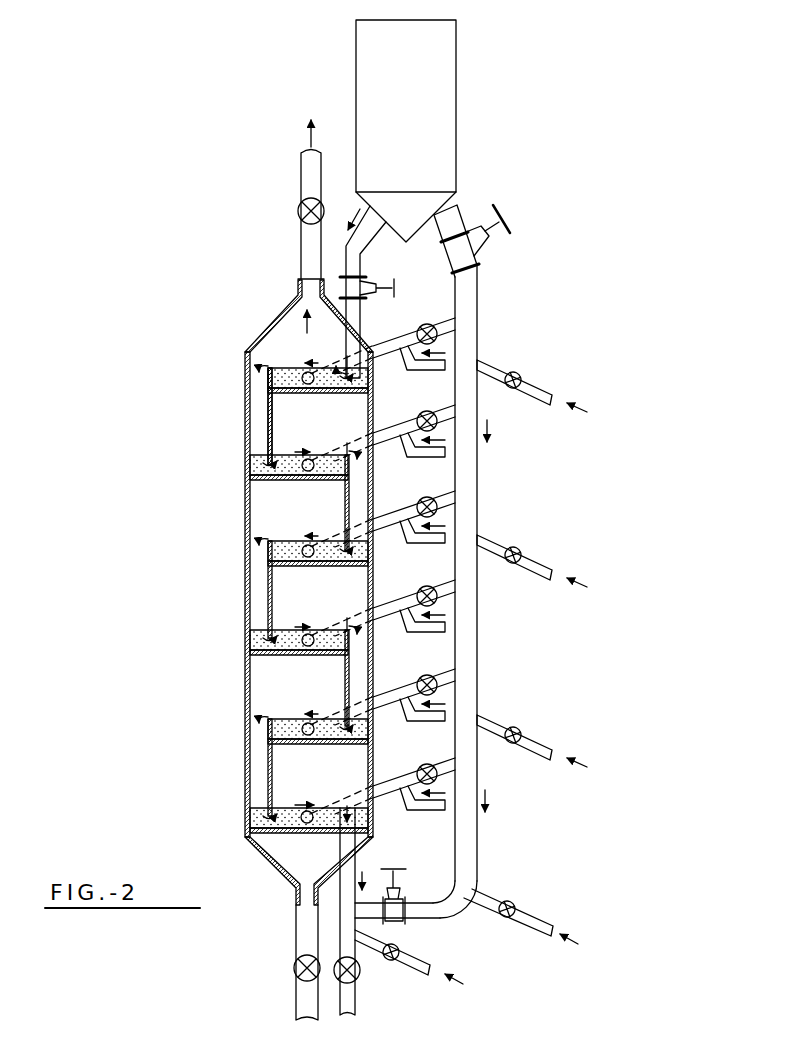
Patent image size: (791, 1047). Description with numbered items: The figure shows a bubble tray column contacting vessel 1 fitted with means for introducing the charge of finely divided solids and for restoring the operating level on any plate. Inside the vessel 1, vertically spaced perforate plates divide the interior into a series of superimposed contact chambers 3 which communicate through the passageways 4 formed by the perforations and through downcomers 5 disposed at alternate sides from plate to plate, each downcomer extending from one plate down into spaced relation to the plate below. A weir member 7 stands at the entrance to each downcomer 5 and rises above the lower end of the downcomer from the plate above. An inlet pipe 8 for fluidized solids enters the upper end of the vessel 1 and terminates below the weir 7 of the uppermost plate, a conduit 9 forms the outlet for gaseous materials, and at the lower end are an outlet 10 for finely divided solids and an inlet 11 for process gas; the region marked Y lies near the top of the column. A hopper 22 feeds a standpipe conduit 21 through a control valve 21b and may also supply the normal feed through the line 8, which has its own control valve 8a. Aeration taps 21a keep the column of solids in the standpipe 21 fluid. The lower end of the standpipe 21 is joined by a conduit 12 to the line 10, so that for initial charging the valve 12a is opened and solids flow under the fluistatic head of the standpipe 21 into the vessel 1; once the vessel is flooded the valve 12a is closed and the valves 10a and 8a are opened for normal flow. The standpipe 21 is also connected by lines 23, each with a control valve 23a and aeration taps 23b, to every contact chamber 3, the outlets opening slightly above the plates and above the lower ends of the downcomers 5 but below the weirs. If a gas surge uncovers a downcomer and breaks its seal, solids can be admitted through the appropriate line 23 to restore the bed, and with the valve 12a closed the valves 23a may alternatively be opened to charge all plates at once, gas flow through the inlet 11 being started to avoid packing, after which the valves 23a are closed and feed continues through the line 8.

The contacting vessel 1 is at (245, 582).
The contact chamber 3 is at (260, 506).
The passageways 4 is at (285, 482).
The downcomers 5 is at (270, 421).
The weir member 7 is at (264, 378).
The inlet pipe 8 is at (358, 316).
The control valve 8a is at (366, 284).
The conduit 9 is at (300, 180).
The outlet 10 is at (357, 1004).
The valve 10a is at (362, 972).
The inlet 11 is at (296, 938).
The conduit 12 is at (442, 912).
The valve 12a is at (402, 892).
The standpipe conduit 21 is at (480, 486).
The aeration taps 21a is at (548, 390).
The control valve 21b is at (485, 242).
The hopper 22 is at (458, 72).
The lines 23 is at (428, 328).
The control valves 23a is at (440, 340).
The aeration taps 23b is at (418, 452).
The gas flow path Y is at (280, 372).